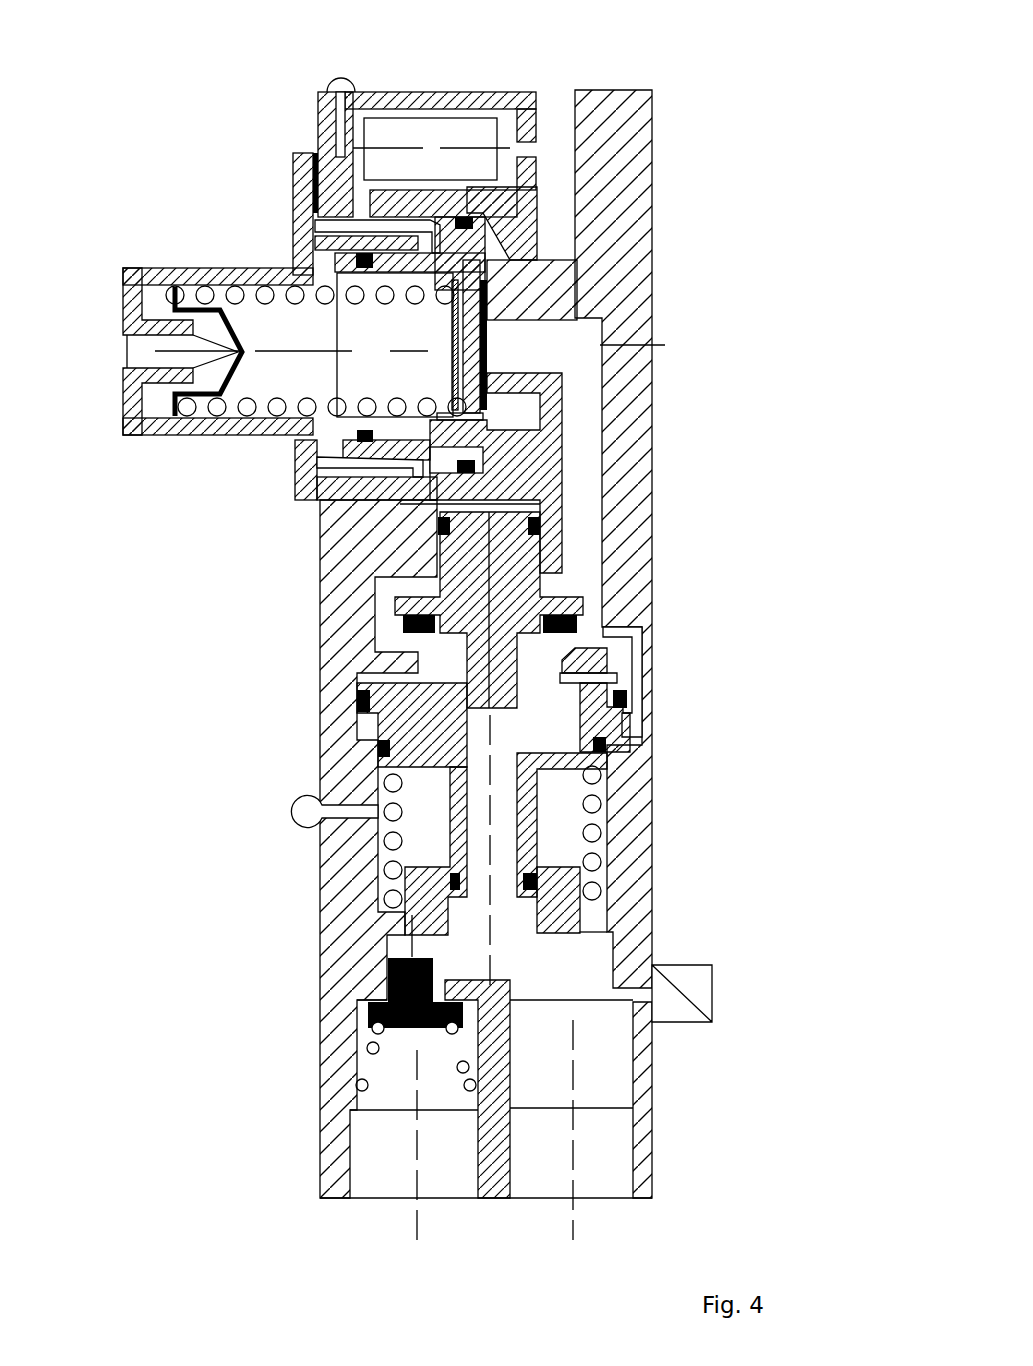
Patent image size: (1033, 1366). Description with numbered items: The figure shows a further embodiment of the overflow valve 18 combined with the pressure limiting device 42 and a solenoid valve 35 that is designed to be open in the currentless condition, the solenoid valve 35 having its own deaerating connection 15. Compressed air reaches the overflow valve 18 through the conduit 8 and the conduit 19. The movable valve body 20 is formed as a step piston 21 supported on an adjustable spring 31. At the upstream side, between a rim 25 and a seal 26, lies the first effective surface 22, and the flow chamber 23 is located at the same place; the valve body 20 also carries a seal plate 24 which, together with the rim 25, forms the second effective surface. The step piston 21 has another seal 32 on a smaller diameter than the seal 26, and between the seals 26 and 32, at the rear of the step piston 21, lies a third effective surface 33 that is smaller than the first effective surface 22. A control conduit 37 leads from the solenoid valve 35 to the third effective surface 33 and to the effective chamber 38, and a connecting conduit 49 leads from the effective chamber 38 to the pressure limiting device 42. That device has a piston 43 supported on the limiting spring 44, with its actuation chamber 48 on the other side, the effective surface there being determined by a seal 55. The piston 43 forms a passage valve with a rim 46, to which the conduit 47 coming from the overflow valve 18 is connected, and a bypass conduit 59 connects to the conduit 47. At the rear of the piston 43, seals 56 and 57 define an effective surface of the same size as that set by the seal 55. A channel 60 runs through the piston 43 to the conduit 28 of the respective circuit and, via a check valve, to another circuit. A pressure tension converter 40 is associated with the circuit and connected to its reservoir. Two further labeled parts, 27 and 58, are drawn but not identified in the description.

The conduit 8 is at (545, 208).
The deaerating connection 15 is at (339, 103).
The overflow valve 18 is at (140, 208).
The conduit 19 is at (648, 289).
The movable valve body 20 is at (618, 238).
The step piston 21 is at (527, 247).
The first effective surface 22 is at (487, 300).
The flow chamber 23 is at (493, 295).
The seal plate 24 is at (487, 359).
The rim 25 is at (487, 322).
The seal 26 is at (466, 222).
The nozzle body 27 is at (492, 375).
The conduit 28 is at (597, 1072).
The adjustable spring 31 is at (228, 292).
The seal 32 is at (302, 237).
The third effective surface 33 is at (316, 232).
The solenoid valve 35 is at (408, 133).
The control conduit 37 is at (318, 150).
The effective chamber 38 is at (430, 454).
The pressure tension converter 40 is at (702, 993).
The pressure limiting device 42 is at (276, 647).
The piston 43 is at (447, 580).
The limiting spring 44 is at (393, 845).
The rim 46 is at (603, 628).
The conduit 47 is at (580, 545).
The actuation chamber 48 is at (520, 503).
The connecting conduit 49 is at (405, 514).
The seal 55 is at (537, 525).
The seal 56 is at (627, 698).
The seal 57 is at (605, 747).
The seal 58 is at (617, 742).
The bypass conduit 59 is at (637, 667).
The channel 60 is at (502, 802).